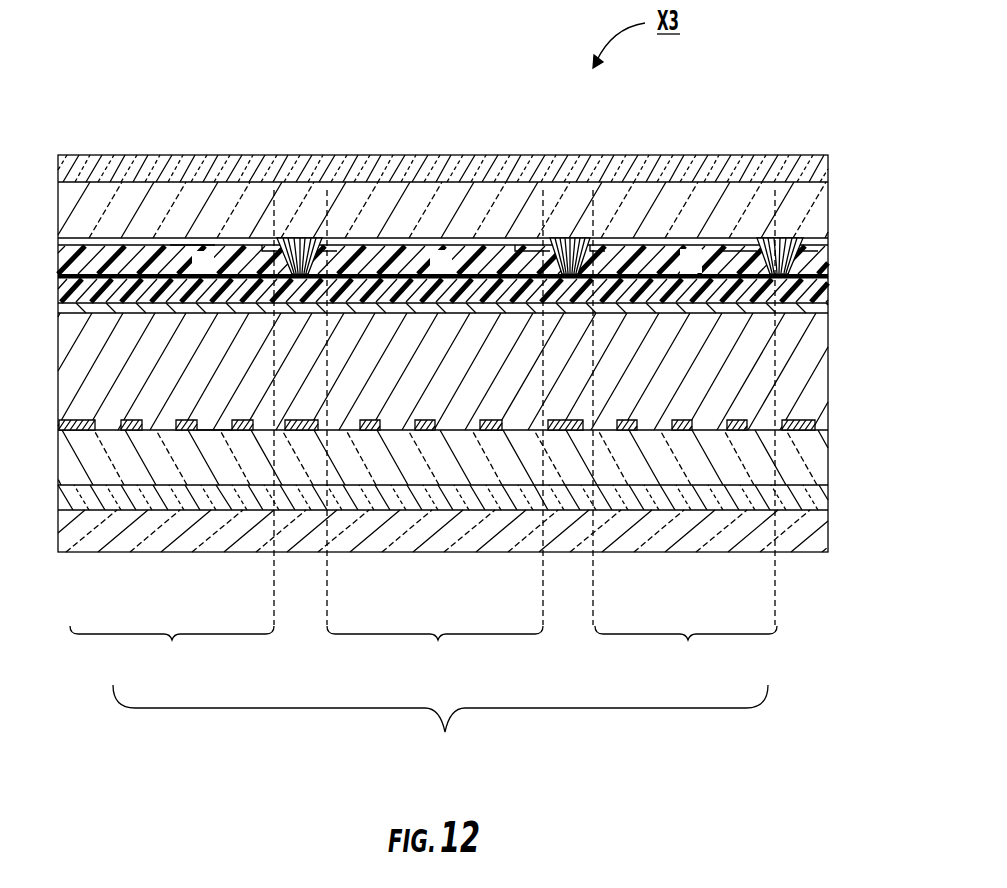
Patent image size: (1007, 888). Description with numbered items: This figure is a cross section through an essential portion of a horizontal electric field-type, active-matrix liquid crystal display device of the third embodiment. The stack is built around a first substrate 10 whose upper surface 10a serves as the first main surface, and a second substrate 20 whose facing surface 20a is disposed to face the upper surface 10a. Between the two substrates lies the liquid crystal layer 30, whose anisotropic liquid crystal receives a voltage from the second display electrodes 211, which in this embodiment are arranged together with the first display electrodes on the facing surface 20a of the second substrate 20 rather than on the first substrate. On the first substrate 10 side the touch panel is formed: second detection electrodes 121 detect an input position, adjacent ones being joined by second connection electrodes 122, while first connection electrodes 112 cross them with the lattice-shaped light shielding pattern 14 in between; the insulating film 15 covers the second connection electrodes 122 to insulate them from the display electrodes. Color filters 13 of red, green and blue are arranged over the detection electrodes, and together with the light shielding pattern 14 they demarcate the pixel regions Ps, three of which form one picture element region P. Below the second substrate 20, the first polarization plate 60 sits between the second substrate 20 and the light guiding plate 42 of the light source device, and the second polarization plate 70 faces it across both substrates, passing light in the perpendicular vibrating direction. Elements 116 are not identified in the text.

The second polarization plate 70 is at (86, 156).
The first substrate 10 is at (344, 190).
The upper surface 10a is at (193, 250).
The second detection electrode 121 is at (122, 238).
The second connection electrode 122 is at (250, 265).
The first connection electrode 112 is at (276, 240).
The color filter 13 is at (178, 250).
The light shielding pattern 14 is at (313, 240).
The insulating film 15 is at (517, 285).
The liquid crystal layer 30 is at (732, 368).
The wiring 116 is at (290, 431).
The second display electrode 211 is at (364, 431).
The second substrate 20 is at (98, 455).
The facing surface 20a is at (227, 433).
The light guiding plate 42 is at (752, 506).
The first polarization plate 60 is at (804, 520).
The pixel region Ps is at (423, 655).
The picture element region P is at (440, 723).